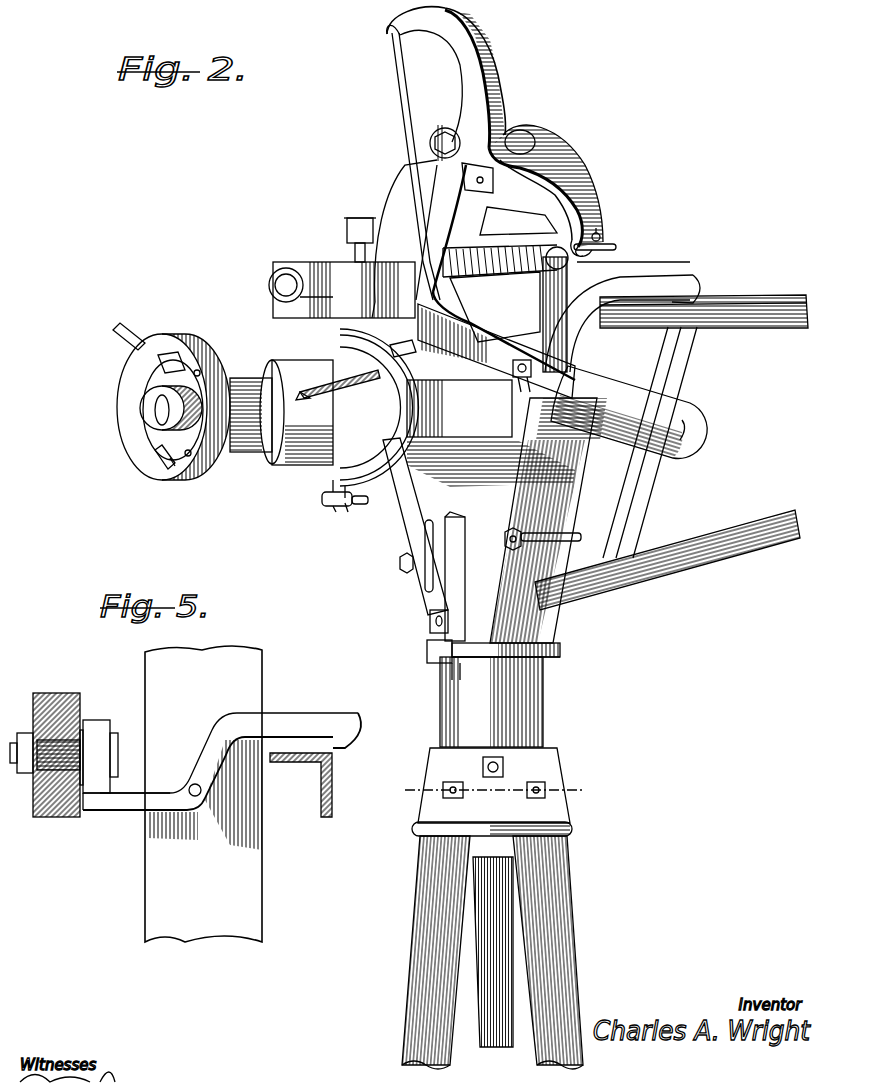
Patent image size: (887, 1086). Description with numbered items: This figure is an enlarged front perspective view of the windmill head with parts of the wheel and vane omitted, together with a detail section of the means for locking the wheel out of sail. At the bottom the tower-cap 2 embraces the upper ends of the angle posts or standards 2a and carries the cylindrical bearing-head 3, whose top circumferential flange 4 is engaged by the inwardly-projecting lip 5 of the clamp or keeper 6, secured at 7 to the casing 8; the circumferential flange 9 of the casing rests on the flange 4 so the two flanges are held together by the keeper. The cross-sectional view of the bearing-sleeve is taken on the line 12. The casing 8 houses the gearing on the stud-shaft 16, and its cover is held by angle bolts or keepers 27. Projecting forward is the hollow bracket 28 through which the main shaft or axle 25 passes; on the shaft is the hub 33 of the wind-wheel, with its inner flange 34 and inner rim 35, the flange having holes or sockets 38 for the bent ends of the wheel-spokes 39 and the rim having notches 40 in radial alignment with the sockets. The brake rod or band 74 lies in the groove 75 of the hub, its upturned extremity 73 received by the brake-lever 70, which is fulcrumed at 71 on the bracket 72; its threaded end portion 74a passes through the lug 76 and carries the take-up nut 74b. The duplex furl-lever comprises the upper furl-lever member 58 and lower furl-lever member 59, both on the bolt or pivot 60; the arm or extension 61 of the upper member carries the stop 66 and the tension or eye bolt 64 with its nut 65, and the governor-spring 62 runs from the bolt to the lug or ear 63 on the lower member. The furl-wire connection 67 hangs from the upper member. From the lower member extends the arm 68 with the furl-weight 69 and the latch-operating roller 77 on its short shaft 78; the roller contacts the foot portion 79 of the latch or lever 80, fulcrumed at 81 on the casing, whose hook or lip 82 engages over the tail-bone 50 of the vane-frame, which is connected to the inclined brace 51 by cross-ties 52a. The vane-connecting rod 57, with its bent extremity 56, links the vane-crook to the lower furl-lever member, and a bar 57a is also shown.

In FIG. 2, the upper furl-lever member 58 is at (470, 32).
In FIG. 2, the furl-wire connection 67 is at (395, 85).
In FIG. 2, the brake-lever 70 is at (400, 268).
In FIG. 2, the arm or extension 61 is at (527, 197).
In FIG. 2, the nut 65 is at (598, 231).
In FIG. 2, the tension or eye bolt 64 is at (612, 253).
In FIG. 2, the bolt or pivot 60 is at (433, 130).
In FIG. 2, the stop 66 is at (492, 168).
In FIG. 2, the lower furl-lever member 59 is at (457, 210).
In FIG. 2, the lug or ear 63 is at (518, 221).
In FIG. 2, the governor-spring 62 is at (505, 293).
In FIG. 2, the latch or lever 80 is at (547, 308).
In FIG. 5, the latch or lever 80 is at (222, 725).
In FIG. 2, the hook or lip 82 is at (675, 294).
In FIG. 5, the hook or lip 82 is at (348, 742).
In FIG. 2, the tail-bone 50 is at (760, 322).
In FIG. 5, the tail-bone 50 is at (312, 762).
In FIG. 2, the cross-ties 52a is at (637, 500).
In FIG. 2, the inclined brace 51 is at (747, 547).
In FIG. 2, the bar 57a is at (496, 345).
In FIG. 2, the furl-weight 69 is at (632, 390).
In FIG. 2, the arm 68 is at (510, 361).
In FIG. 5, the arm 68 is at (48, 715).
In FIG. 2, the short shaft 78 is at (523, 379).
In FIG. 5, the short shaft 78 is at (57, 775).
In FIG. 2, the bracket 28 is at (491, 433).
In FIG. 2, the angle bolts or keepers 27 is at (548, 520).
In FIG. 2, the casing 8 is at (467, 576).
In FIG. 5, the casing 8 is at (203, 794).
In FIG. 2, the groove 75 is at (381, 458).
In FIG. 2, the securing point 7 is at (432, 622).
In FIG. 2, the clamp or keeper 6 is at (432, 652).
In FIG. 2, the inwardly-projecting lip 5 is at (458, 667).
In FIG. 2, the circumferential flange 9 is at (560, 643).
In FIG. 2, the circumferential flange 4 is at (560, 657).
In FIG. 2, the bearing-head 3 is at (543, 701).
In FIG. 2, the tower-cap 2 is at (547, 807).
In FIG. 2, the section line 12 is at (492, 779).
In FIG. 2, the angle posts or standards 2a is at (555, 925).
In FIG. 2, the main shaft or axle 25 is at (160, 410).
In FIG. 2, the wheel-spokes 39 is at (120, 325).
In FIG. 2, the notches 40 is at (158, 362).
In FIG. 2, the holes or sockets 38 is at (200, 370).
In FIG. 2, the bent extremity 56 is at (172, 458).
In FIG. 2, the vane-connecting rod 57 is at (185, 495).
In FIG. 2, the hub 33 is at (250, 455).
In FIG. 2, the inner flange 34 is at (296, 412).
In FIG. 2, the brake rod or band 74 is at (327, 493).
In FIG. 2, the inner rim 35 is at (336, 507).
In FIG. 2, the lug 76 is at (365, 505).
In FIG. 2, the threaded end portion 74a is at (346, 512).
In FIG. 2, the take-up nut or adjusting device 74b is at (335, 510).
In FIG. 2, the bracket 72 is at (333, 270).
In FIG. 2, the stud-shaft 16 is at (271, 284).
In FIG. 2, the upturned extremity 73 is at (300, 298).
In FIG. 2, the fulcrum 71 is at (352, 250).
In FIG. 5, the foot portion 79 is at (127, 813).
In FIG. 5, the fulcrum 81 is at (190, 784).
In FIG. 5, the latch-operating roller 77 is at (100, 728).